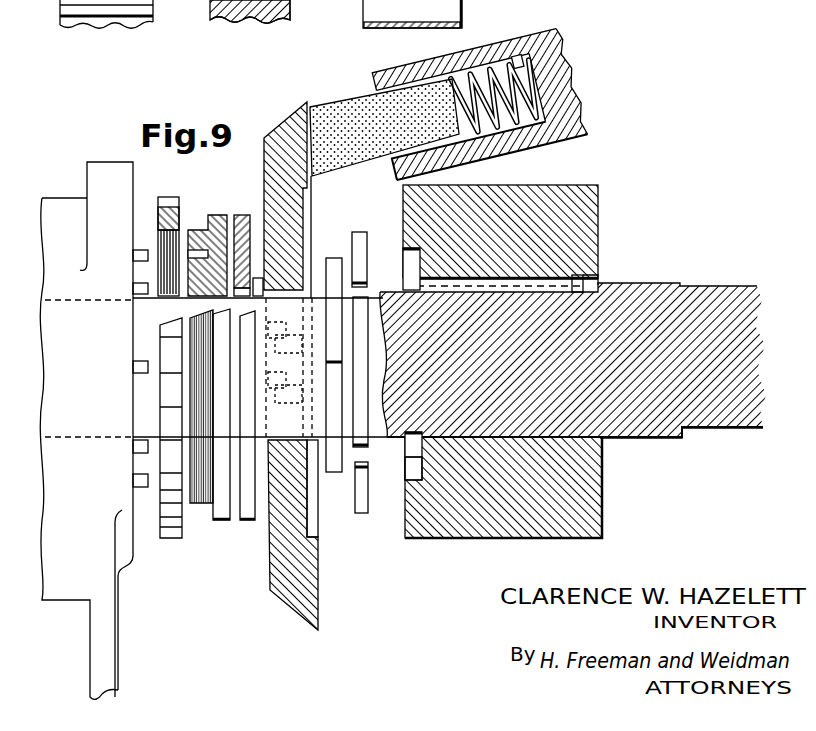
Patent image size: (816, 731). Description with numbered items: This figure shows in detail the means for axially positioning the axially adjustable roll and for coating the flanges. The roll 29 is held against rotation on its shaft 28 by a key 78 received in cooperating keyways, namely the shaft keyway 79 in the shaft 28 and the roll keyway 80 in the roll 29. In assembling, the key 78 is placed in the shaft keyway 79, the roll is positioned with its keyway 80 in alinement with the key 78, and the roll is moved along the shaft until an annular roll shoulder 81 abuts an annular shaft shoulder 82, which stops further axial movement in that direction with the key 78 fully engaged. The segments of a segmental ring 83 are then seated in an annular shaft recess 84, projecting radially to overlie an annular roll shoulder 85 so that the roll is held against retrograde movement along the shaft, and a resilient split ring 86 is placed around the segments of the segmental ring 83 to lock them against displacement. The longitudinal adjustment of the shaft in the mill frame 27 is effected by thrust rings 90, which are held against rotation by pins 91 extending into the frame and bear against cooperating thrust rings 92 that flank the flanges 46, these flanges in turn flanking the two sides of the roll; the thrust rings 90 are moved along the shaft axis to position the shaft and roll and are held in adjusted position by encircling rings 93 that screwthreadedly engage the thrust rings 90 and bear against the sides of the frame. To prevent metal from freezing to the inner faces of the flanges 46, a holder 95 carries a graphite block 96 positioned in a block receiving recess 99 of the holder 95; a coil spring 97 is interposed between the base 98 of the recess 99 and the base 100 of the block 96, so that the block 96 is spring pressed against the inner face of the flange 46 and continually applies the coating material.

The frame 27 is at (58, 217).
The shaft 28 is at (710, 307).
The roll 29 is at (588, 203).
The flanges 46 is at (280, 127).
The key 78 is at (580, 275).
The shaft keyway 79 is at (586, 280).
The roll keyway 80 is at (550, 277).
The annular roll shoulder 81 is at (573, 443).
The annular shaft shoulder 82 is at (600, 440).
The segmental ring 83 is at (359, 243).
The annular shaft recess 84 is at (413, 472).
The annular roll shoulder 85 is at (412, 451).
The resilient split ring 86 is at (338, 466).
The thrust rings 90 is at (196, 229).
The pins 91 is at (137, 287).
The cooperating thrust rings 92 is at (238, 214).
The encircling rings 93 is at (157, 210).
The holder 95 is at (560, 98).
The graphite block 96 is at (343, 117).
The coil spring 97 is at (516, 145).
The base of the block receiving recess 98 is at (537, 78).
The block receiving recess 99 is at (518, 58).
The base of the block 100 is at (476, 62).